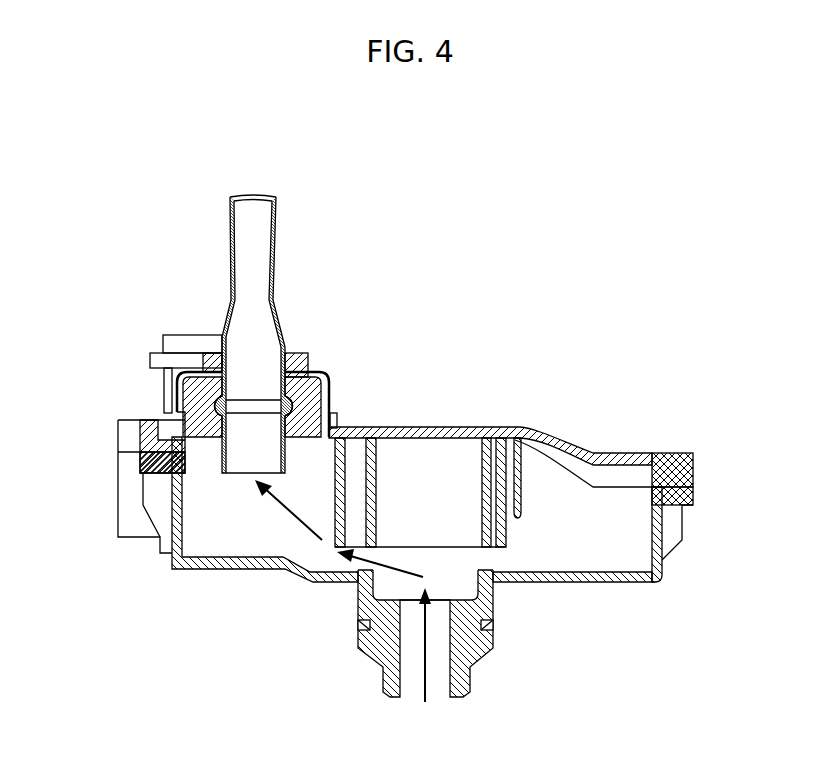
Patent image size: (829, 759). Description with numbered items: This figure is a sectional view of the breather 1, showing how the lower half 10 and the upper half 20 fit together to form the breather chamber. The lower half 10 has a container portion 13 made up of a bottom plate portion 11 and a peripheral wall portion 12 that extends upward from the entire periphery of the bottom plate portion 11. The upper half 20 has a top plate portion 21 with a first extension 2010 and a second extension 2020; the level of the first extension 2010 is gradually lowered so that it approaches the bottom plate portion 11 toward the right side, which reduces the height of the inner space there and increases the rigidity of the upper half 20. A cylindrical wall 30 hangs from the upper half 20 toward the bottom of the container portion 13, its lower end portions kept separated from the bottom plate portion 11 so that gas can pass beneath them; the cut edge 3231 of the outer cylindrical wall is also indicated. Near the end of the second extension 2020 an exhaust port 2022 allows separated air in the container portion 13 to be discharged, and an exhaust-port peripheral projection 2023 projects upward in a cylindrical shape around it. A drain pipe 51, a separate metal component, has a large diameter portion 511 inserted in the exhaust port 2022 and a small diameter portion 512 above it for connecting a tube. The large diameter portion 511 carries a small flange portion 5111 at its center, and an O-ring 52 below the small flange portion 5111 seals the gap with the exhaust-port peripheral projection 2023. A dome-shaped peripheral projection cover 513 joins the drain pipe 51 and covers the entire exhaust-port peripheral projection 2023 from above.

The valve device 1 is at (748, 330).
The lower half 10 is at (471, 528).
The bottom plate portion 11 is at (597, 582).
The peripheral wall portion 12 is at (683, 542).
The container portion 13 is at (717, 657).
The upper half 20 is at (411, 430).
The first extension 2010 is at (693, 435).
The second extension 2020 is at (135, 414).
The exhaust port 2022 is at (173, 567).
The exhaust-port peripheral projection 2023 is at (330, 388).
The top plate portion 21 is at (460, 420).
The cylindrical wall 30 is at (310, 577).
The cylindrical wall ends 3231 is at (500, 480).
The drain pipe 51 is at (247, 331).
The large diameter portion 511 is at (274, 472).
The small flange portion 5111 is at (302, 347).
The small diameter portion 512 is at (224, 197).
The peripheral projection cover 513 is at (173, 402).
The O-ring 52 is at (212, 410).